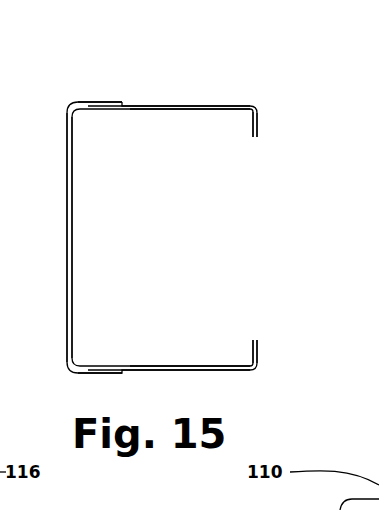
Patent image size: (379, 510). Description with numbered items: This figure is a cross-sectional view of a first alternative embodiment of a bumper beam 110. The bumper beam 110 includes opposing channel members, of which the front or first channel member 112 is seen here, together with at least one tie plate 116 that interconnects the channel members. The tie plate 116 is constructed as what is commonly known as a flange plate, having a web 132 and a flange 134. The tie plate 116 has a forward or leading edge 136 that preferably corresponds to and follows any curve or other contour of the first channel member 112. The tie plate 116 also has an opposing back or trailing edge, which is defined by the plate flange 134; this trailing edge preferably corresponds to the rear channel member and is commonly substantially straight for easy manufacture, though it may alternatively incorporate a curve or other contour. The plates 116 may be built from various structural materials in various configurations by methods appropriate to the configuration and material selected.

The bumper beam 110 is at (100, 72).
The first channel member 112 is at (68, 210).
The tie plate 116 is at (163, 106).
The web 132 is at (152, 111).
The flange 134 is at (259, 128).
The leading edge 136 is at (88, 110).